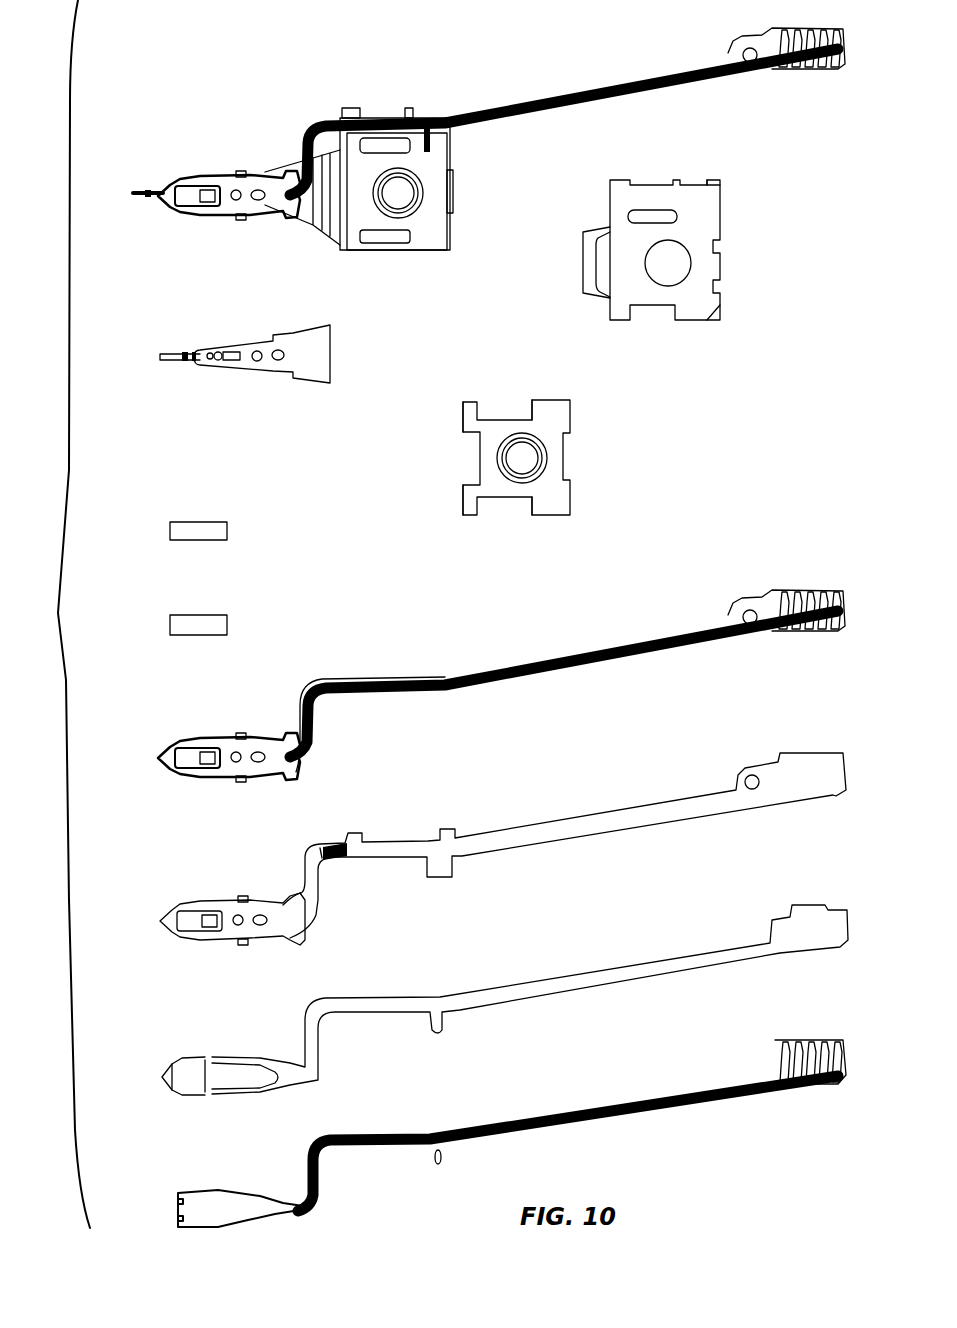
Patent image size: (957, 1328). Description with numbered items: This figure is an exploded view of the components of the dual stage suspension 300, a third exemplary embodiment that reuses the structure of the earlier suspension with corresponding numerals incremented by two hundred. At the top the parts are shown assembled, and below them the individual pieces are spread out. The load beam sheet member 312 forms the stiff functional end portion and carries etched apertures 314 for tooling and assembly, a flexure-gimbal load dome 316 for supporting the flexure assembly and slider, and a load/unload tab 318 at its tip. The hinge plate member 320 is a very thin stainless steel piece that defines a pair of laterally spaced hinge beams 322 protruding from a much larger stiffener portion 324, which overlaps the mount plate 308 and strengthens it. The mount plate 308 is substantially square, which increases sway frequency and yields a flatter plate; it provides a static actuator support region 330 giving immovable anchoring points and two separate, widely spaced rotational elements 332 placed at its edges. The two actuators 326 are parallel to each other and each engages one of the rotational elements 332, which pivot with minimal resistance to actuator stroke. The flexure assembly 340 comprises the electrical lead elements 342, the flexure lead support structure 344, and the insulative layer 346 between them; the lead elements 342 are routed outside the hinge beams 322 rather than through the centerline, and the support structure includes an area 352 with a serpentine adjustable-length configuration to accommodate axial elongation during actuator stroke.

The suspension 300 is at (52, 614).
The mount plate 308 is at (541, 446).
The load beam sheet member 312 is at (258, 361).
The etched apertures 314 is at (277, 351).
The flexure-gimbal feature (load dome) 316 is at (233, 367).
The load/unload tab 318 is at (173, 353).
The hinge plate member 320 is at (697, 249).
The hinge beams 322 is at (602, 228).
The stiffener portion 324 is at (757, 232).
The actuators 326 is at (215, 522).
The static actuator support region 330 is at (557, 403).
The rotational elements 332 is at (463, 410).
The flexure assembly 340 is at (580, 668).
The electrical lead elements 342 is at (585, 1120).
The flexure lead support structure 344 is at (503, 849).
The insulative layer 346 is at (583, 983).
The axial elongation area 352 is at (325, 846).